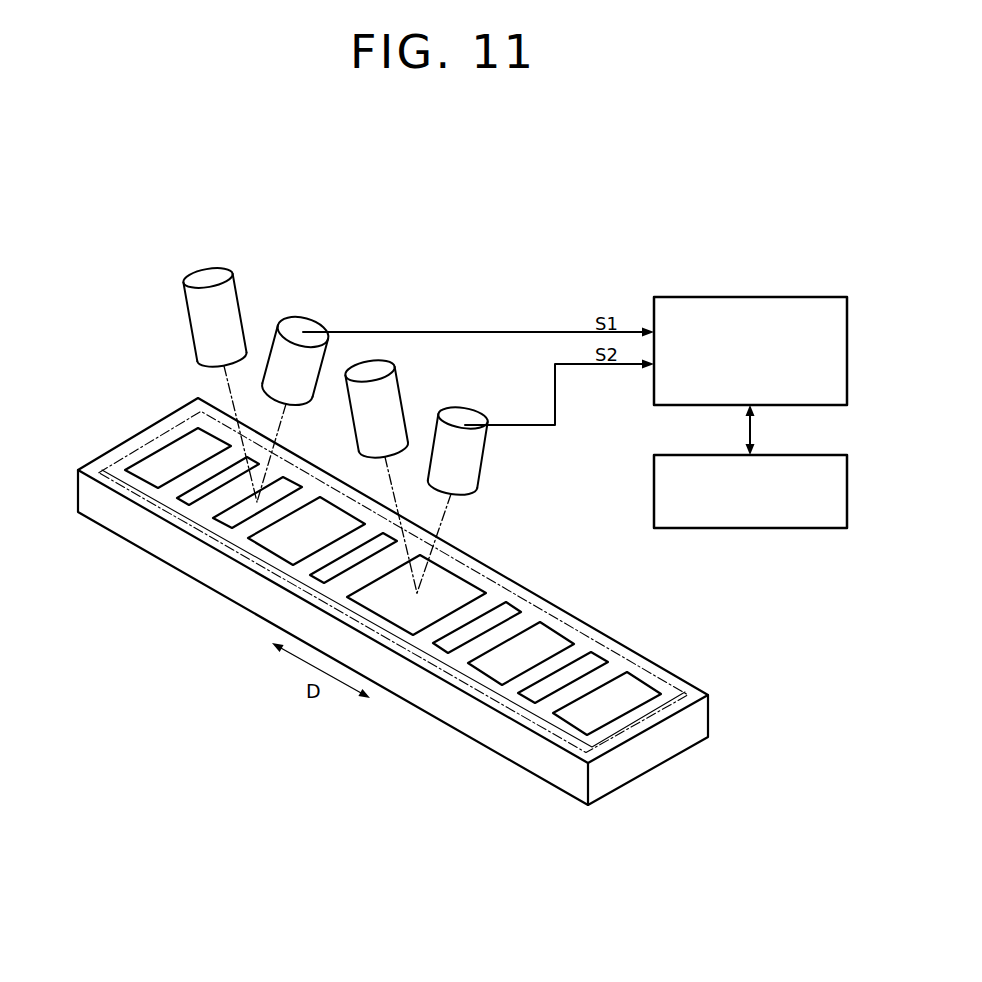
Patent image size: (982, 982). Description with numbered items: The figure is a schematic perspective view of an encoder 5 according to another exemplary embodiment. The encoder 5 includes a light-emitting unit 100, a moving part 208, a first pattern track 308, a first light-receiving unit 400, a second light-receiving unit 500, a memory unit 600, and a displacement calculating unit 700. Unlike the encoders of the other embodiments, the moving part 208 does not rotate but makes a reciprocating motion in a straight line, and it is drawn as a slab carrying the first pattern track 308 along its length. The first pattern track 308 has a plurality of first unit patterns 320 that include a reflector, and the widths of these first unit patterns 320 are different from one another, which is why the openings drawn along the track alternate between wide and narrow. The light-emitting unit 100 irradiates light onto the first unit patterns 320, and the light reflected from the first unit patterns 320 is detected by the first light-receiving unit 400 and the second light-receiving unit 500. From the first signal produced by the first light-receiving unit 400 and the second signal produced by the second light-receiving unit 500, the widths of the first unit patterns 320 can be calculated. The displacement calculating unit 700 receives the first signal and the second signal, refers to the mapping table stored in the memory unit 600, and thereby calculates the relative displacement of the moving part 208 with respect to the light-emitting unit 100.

The encoder 5 is at (584, 166).
The light-emitting unit 100 is at (212, 270).
The first light-receiving unit 400 is at (303, 318).
The second light-receiving unit 500 is at (463, 408).
The moving part 208 is at (138, 440).
The first pattern track 308 is at (518, 707).
The first unit patterns 320 is at (153, 477).
The displacement calculating unit 700 is at (790, 296).
The memory unit 600 is at (790, 454).